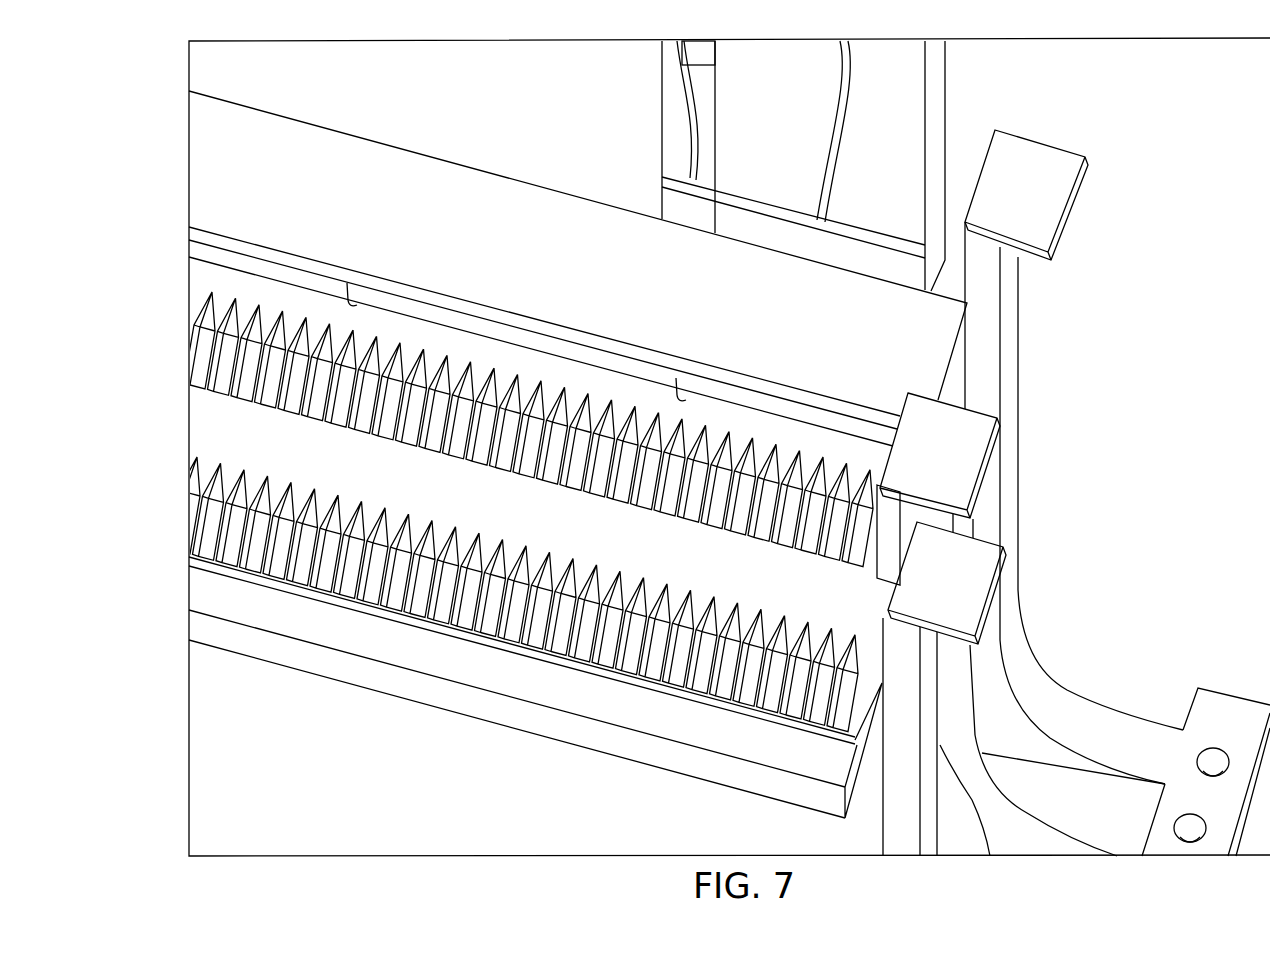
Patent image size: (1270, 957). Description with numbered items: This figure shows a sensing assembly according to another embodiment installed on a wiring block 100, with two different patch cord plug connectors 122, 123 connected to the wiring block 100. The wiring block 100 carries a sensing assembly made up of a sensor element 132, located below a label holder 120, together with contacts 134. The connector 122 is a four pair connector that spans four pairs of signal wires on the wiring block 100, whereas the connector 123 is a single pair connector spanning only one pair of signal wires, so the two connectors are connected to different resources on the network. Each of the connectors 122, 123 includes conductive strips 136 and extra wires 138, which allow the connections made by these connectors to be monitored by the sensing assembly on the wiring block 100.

The wiring block 100 is at (177, 158).
The label holder 120 is at (319, 207).
The patch cord plug connector 122 is at (862, 141).
The patch cord plug connector 123 is at (698, 53).
The sensor element 132 is at (963, 362).
The contacts 134 is at (348, 312).
The conductive strips 136 is at (680, 187).
The extra wires 138 is at (692, 125).